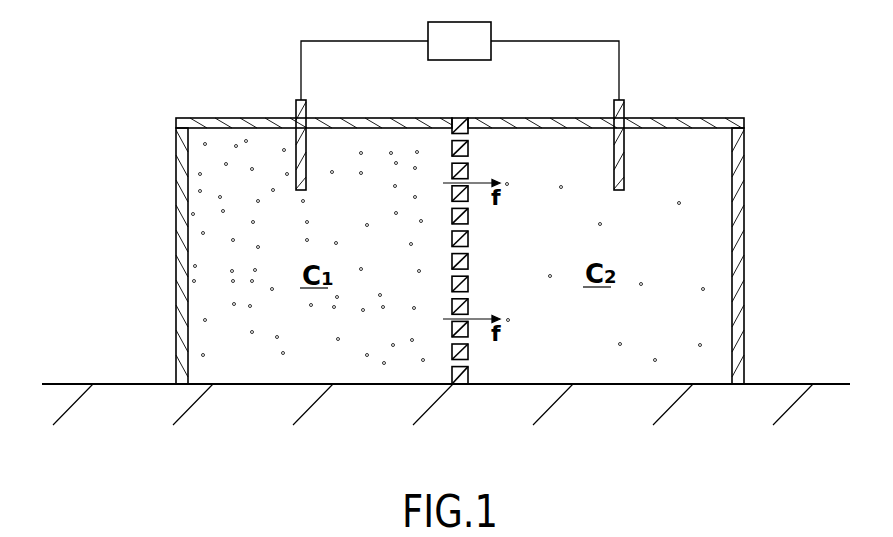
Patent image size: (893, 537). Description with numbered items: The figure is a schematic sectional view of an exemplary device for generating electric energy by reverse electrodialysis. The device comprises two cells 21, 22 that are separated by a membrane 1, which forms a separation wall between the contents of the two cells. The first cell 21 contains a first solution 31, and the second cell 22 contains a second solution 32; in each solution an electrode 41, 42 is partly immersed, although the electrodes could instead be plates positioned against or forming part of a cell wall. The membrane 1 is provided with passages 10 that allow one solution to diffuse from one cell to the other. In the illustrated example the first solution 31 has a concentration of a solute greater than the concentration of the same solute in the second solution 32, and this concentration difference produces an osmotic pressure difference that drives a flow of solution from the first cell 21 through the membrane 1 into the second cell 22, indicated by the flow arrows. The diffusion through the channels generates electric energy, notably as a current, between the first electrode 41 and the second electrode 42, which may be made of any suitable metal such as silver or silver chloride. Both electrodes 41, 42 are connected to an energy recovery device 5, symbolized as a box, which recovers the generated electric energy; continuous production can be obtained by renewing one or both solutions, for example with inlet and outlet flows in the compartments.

The membrane 1 is at (486, 290).
The passages 10 is at (468, 163).
The first cell 21 is at (176, 119).
The second cell 22 is at (745, 119).
The first solution 31 is at (253, 245).
The second solution 32 is at (672, 234).
The first electrode 41 is at (296, 102).
The second electrode 42 is at (624, 104).
The energy recovery device 5 is at (467, 53).